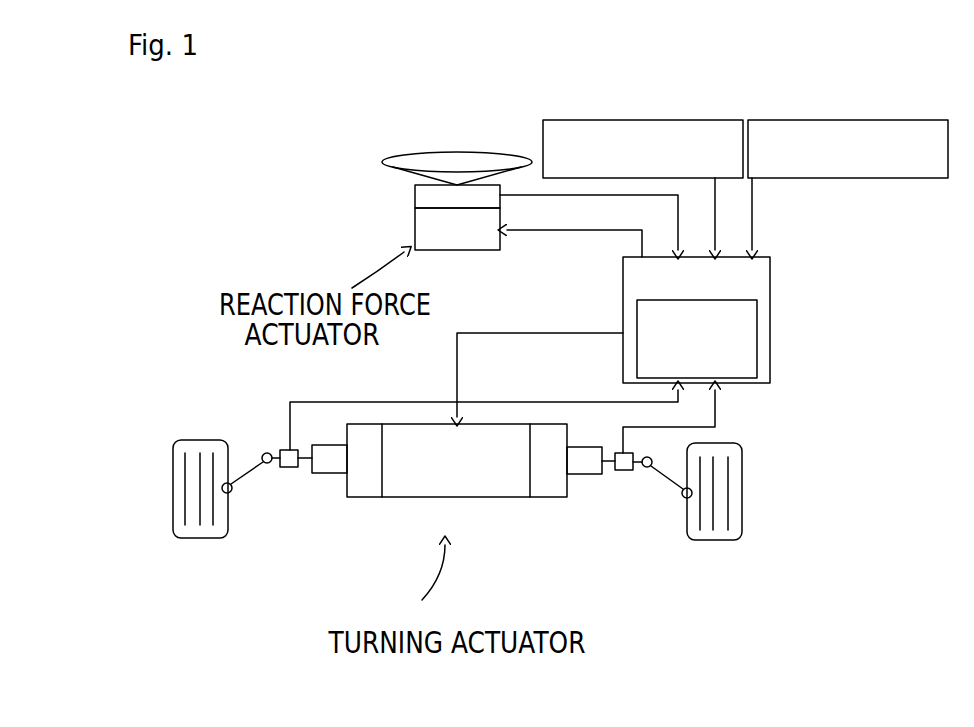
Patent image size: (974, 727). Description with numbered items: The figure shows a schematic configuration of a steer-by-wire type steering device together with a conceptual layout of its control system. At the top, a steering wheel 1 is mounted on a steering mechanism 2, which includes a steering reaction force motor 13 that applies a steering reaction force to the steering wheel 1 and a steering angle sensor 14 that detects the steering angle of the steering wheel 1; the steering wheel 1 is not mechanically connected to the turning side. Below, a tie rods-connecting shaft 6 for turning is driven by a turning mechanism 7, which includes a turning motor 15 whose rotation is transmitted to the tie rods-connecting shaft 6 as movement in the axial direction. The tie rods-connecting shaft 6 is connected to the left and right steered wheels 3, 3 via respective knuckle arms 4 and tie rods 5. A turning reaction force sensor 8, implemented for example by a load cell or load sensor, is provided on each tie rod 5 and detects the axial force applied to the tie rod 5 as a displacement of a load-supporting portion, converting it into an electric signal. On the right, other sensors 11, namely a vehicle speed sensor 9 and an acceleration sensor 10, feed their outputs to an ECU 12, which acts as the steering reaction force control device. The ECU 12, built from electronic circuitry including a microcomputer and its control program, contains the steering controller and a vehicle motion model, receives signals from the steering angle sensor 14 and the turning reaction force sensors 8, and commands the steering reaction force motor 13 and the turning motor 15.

The steering wheel 1 is at (457, 160).
The steering mechanism 2 is at (412, 217).
The steered wheel 3 is at (180, 532).
The knuckle arm 4 is at (243, 487).
The tie rod 5 is at (303, 464).
The tie rods-connecting shaft 6 is at (585, 476).
The turning mechanism 7 is at (475, 497).
The turning reaction force sensor 8 is at (292, 468).
The vehicle speed sensor 9 is at (848, 118).
The acceleration sensor 10 is at (710, 120).
The other sensors 11 is at (745, 104).
The ECU 12 is at (763, 273).
The steering reaction force motor 13 is at (415, 232).
The steering angle sensor 14 is at (415, 195).
The turning motor 15 is at (437, 490).